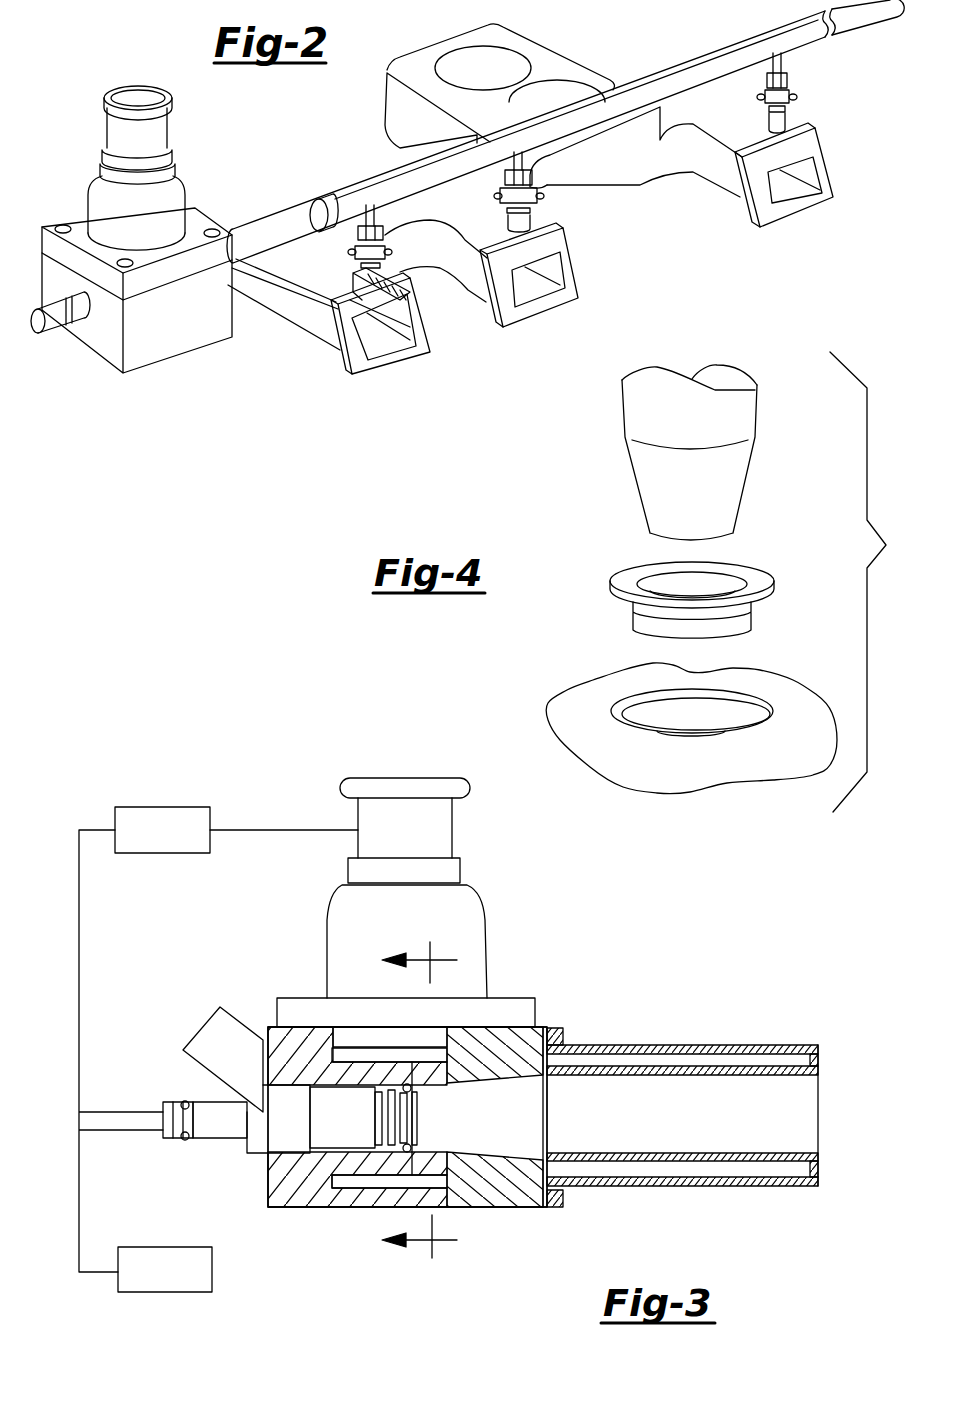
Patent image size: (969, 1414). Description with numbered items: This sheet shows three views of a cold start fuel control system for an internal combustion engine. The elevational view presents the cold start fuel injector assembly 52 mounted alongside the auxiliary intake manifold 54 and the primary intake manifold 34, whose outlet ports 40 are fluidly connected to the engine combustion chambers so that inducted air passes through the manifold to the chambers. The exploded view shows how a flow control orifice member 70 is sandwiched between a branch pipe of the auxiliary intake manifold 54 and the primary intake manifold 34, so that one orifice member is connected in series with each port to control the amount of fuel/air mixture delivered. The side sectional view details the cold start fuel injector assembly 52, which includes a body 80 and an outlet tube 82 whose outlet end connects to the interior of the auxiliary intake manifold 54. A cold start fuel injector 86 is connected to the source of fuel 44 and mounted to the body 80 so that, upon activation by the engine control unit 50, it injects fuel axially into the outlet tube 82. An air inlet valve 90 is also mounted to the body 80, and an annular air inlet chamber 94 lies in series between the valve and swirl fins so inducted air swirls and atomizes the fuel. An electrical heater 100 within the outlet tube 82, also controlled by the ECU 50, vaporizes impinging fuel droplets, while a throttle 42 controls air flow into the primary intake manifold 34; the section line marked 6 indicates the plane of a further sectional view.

In FIG. 2, the primary intake manifold 34 is at (300, 324).
In FIG. 4, the primary intake manifold 34 is at (732, 772).
In FIG. 2, the outlet port 40 is at (524, 296).
In FIG. 3, the throttle 42 is at (435, 1075).
In FIG. 3, the source of fuel 44 is at (207, 1283).
In FIG. 3, the engine control unit 50 is at (211, 993).
In FIG. 2, the cold start fuel injector assembly 52 is at (68, 204).
In FIG. 3, the cold start fuel injector assembly 52 is at (356, 1213).
In FIG. 2, the auxiliary intake manifold 54 is at (368, 185).
In FIG. 4, the auxiliary intake manifold 54 is at (750, 413).
In FIG. 4, the flow control orifice member 70 is at (612, 595).
In FIG. 3, the body 80 is at (278, 1206).
In FIG. 3, the outlet tube 82 is at (692, 1043).
In FIG. 3, the cold start fuel injector 86 is at (260, 1150).
In FIG. 3, the air inlet valve 90 is at (460, 875).
In FIG. 3, the annular air inlet chamber 94 is at (432, 1182).
In FIG. 3, the electrical heater 100 is at (788, 1075).
In FIG. 3, the section line 6- 6 is at (424, 1103).